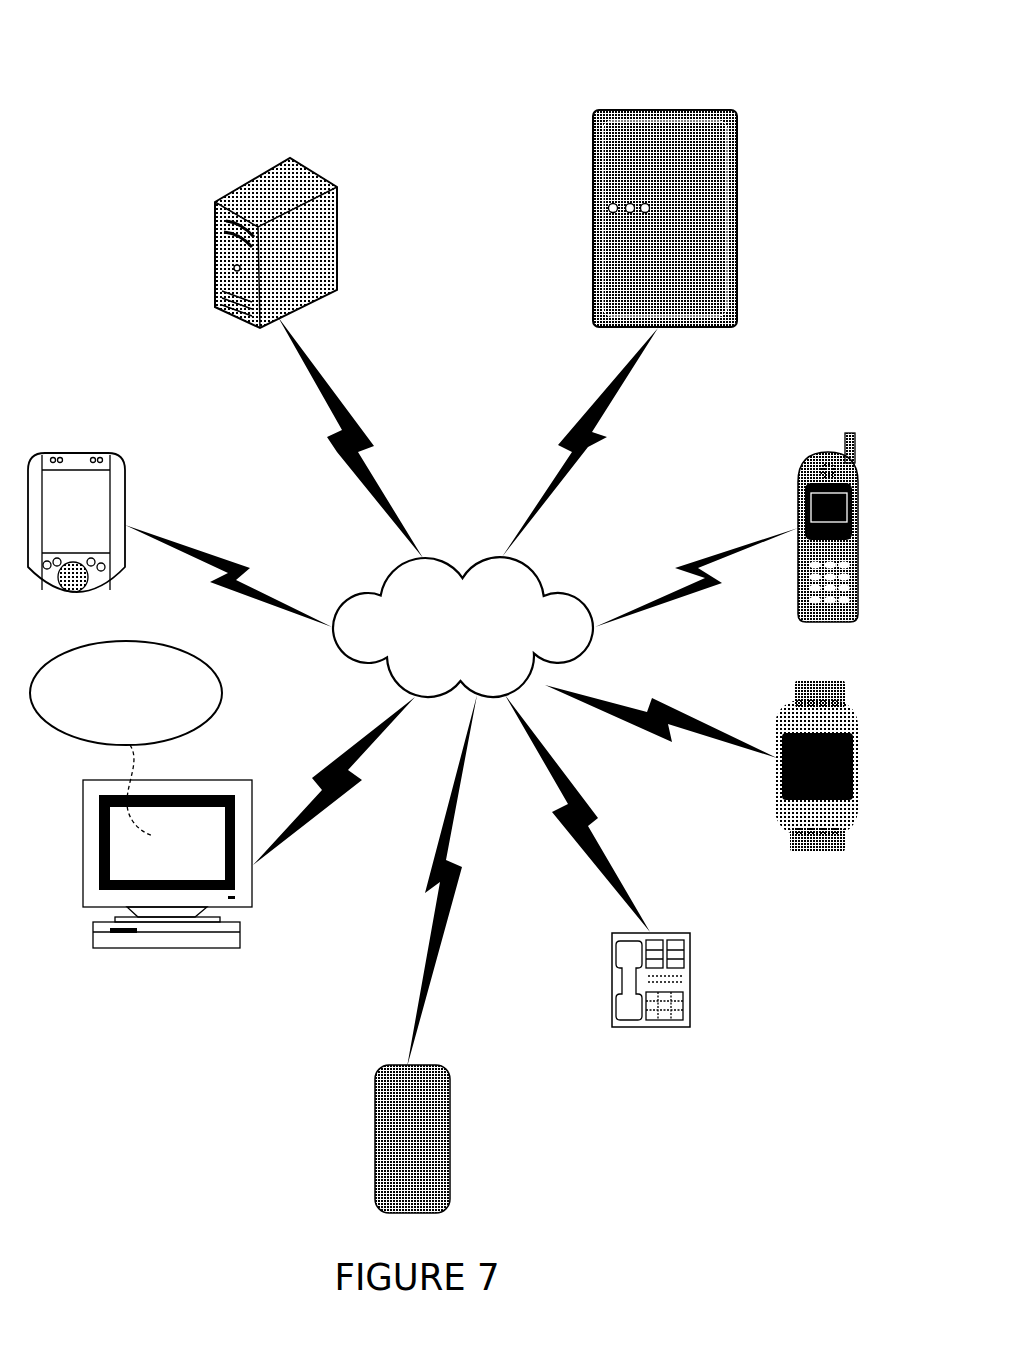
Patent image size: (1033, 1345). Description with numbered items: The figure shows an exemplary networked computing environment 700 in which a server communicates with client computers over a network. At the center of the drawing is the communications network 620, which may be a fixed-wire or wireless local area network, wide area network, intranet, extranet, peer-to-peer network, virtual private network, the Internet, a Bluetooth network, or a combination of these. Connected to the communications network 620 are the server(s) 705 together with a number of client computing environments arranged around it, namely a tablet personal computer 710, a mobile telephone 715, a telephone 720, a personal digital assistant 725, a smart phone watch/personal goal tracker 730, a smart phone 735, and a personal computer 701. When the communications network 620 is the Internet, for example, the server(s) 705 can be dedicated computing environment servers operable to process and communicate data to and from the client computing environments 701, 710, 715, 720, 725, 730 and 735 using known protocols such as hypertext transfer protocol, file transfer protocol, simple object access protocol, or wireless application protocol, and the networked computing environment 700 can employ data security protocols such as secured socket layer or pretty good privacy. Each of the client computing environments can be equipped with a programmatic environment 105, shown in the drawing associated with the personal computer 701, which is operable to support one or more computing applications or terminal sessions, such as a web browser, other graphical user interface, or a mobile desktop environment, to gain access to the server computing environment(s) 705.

The networked computing environment 700 is at (158, 62).
The server 705 is at (282, 200).
The tablet personal computer 710 is at (642, 157).
The mobile telephone 715 is at (806, 472).
The telephone 720 is at (683, 962).
The personal digital assistant 725 is at (93, 480).
The smart phone watch/personal goal tracker 730 is at (798, 740).
The smart phone 735 is at (383, 1142).
The personal computer 701 is at (152, 976).
The communications network 620 is at (448, 648).
The programmatic environment 105 is at (193, 715).